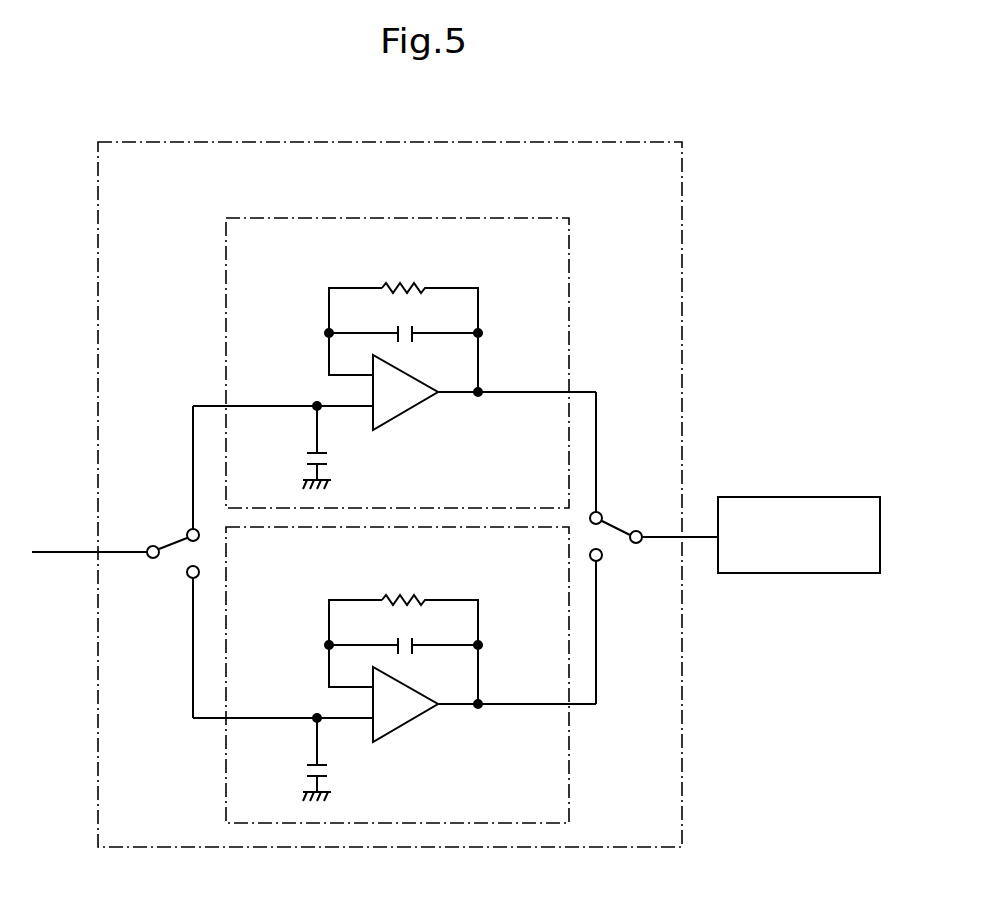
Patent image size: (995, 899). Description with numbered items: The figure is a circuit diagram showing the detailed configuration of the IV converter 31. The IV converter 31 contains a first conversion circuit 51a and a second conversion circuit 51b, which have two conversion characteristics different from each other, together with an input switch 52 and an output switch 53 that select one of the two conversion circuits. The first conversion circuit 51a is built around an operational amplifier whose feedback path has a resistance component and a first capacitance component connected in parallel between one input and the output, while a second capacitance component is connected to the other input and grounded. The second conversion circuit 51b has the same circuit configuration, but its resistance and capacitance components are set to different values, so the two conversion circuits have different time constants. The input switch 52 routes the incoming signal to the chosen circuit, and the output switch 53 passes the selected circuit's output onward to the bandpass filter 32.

The IV converter 31 is at (542, 142).
The first conversion circuit 51a is at (226, 333).
The second conversion circuit 51b is at (226, 805).
The input switch 52 is at (165, 580).
The output switch 53 is at (636, 560).
The bandpass filter 32 is at (735, 497).